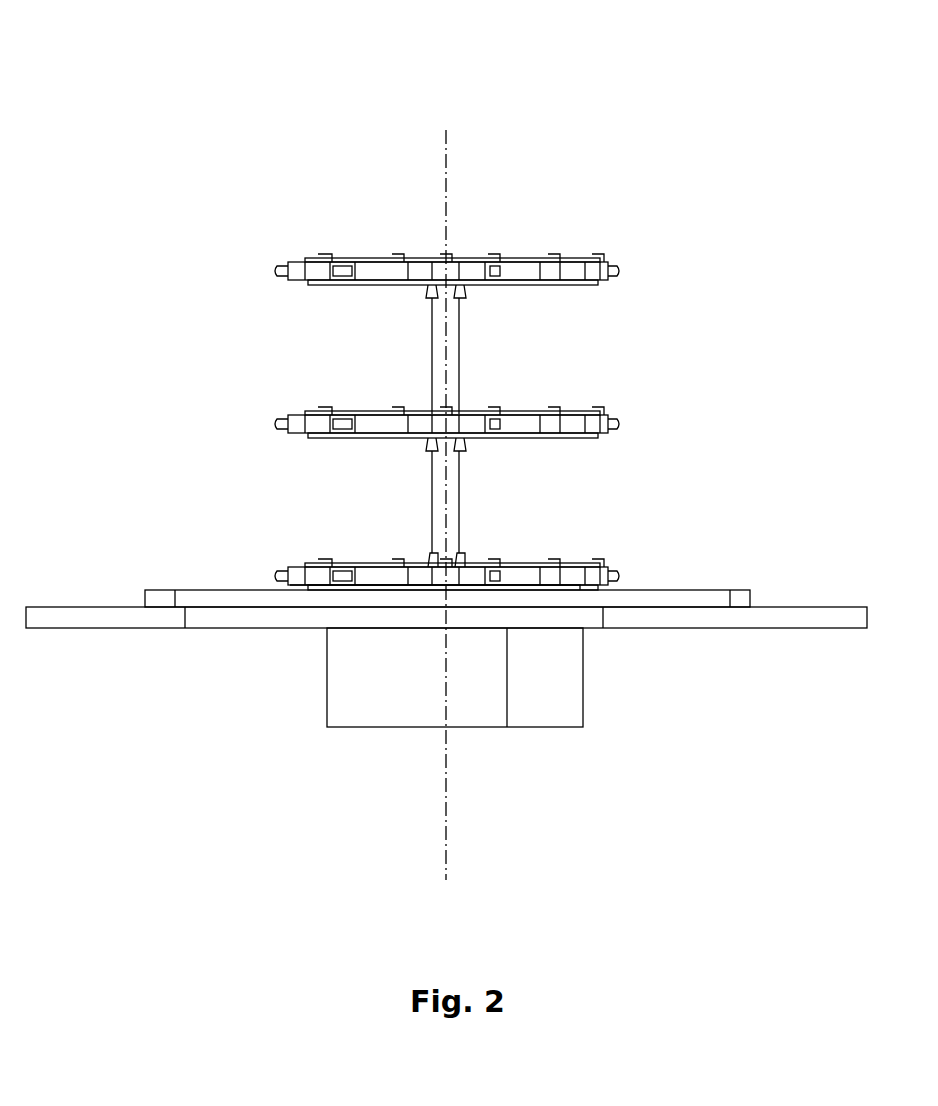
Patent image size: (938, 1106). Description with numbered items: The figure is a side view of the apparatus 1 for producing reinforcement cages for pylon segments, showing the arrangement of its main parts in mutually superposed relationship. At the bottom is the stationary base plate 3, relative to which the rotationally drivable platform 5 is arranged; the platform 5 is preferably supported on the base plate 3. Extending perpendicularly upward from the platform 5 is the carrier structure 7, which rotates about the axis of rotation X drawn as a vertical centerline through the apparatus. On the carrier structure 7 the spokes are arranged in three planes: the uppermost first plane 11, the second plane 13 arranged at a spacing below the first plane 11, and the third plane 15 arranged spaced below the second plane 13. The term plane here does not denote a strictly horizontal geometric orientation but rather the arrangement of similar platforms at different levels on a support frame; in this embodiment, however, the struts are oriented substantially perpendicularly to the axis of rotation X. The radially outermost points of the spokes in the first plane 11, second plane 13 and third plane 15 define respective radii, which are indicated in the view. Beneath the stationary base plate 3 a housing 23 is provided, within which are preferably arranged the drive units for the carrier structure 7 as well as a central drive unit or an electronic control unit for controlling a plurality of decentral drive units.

The apparatus 1 is at (152, 162).
The stationary base plate 3 is at (117, 622).
The rotationally drivable platform 5 is at (200, 595).
The carrier structure 7 is at (460, 432).
The first plane 11 is at (270, 240).
The second plane 13 is at (270, 390).
The third plane 15 is at (270, 536).
The housing 23 is at (316, 673).
The axis of rotation X is at (446, 152).